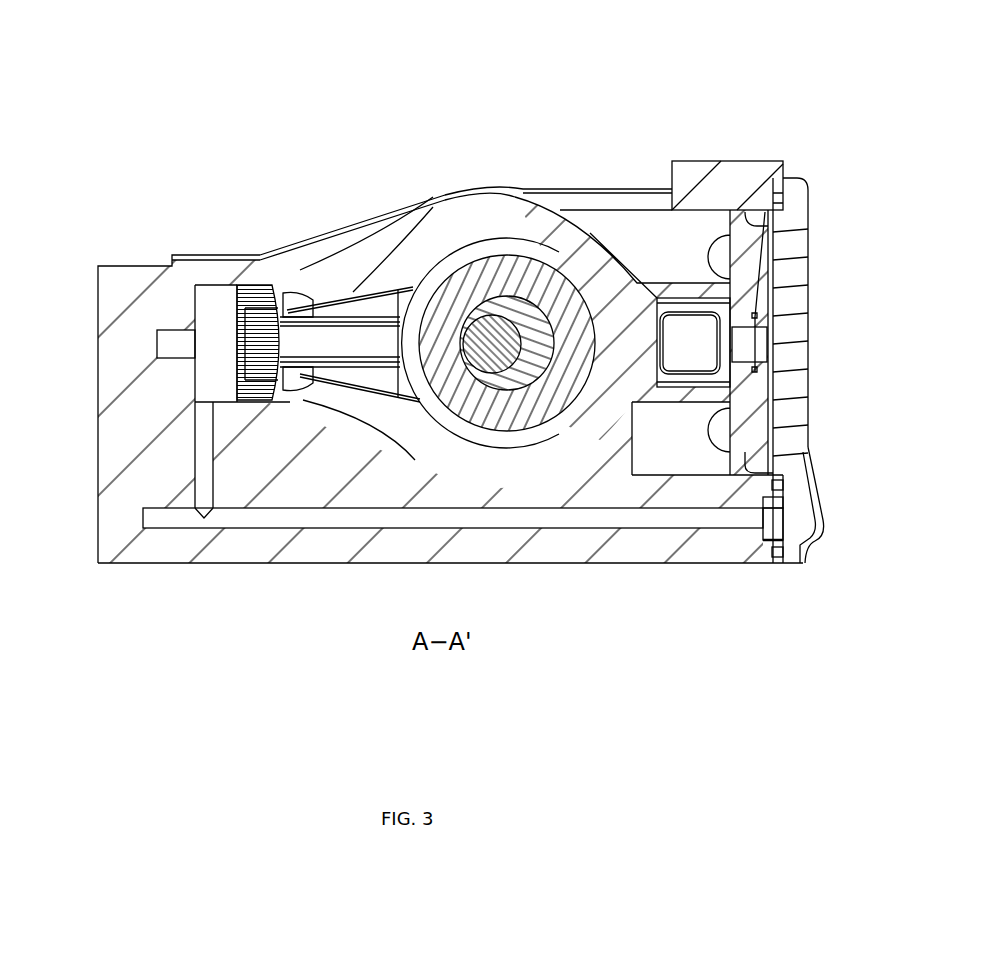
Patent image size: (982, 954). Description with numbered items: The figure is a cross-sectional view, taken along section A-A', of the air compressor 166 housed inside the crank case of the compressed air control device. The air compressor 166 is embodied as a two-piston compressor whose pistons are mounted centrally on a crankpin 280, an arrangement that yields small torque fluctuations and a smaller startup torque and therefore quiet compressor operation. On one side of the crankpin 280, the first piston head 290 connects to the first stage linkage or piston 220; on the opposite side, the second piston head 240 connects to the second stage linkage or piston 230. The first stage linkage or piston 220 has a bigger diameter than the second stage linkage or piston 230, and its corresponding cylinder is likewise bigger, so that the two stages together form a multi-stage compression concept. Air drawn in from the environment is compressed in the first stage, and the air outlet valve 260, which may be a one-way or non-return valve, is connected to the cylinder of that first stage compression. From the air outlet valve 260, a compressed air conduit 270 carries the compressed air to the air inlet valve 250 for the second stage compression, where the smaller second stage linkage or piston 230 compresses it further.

The air compressor 166 is at (547, 125).
The first stage linkage or piston 220 is at (651, 283).
The second stage linkage or piston 230 is at (400, 330).
The second piston head 240 is at (255, 305).
The air inlet valve 250 is at (190, 341).
The air outlet valve 260 is at (765, 517).
The compressed air conduit 270 is at (320, 528).
The crankpin 280 is at (460, 327).
The first piston head 290 is at (743, 343).